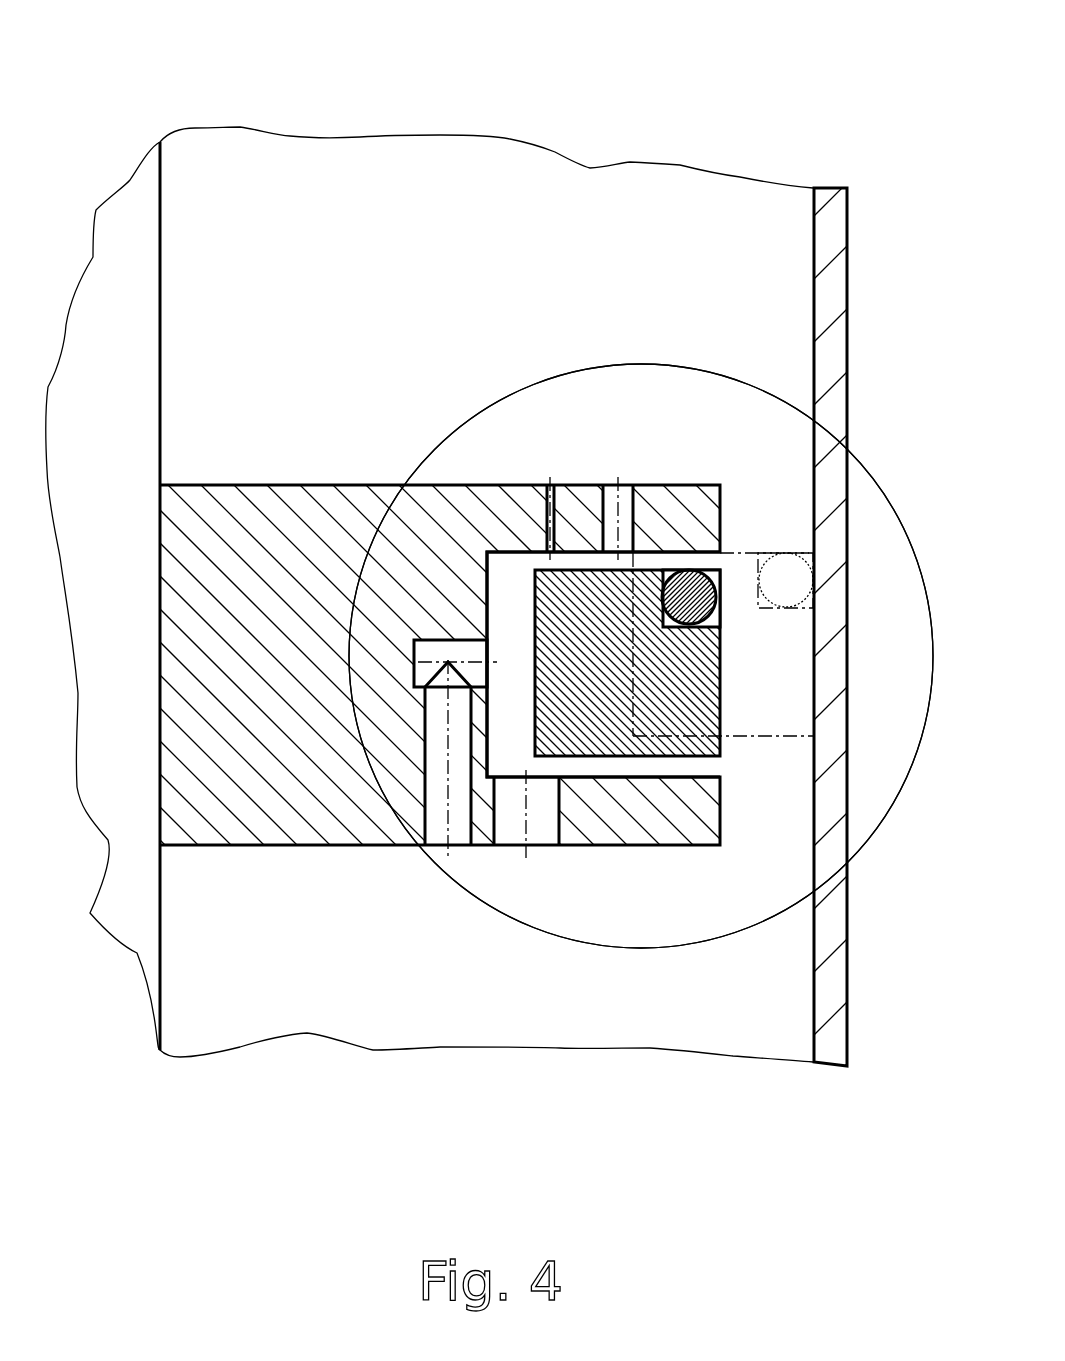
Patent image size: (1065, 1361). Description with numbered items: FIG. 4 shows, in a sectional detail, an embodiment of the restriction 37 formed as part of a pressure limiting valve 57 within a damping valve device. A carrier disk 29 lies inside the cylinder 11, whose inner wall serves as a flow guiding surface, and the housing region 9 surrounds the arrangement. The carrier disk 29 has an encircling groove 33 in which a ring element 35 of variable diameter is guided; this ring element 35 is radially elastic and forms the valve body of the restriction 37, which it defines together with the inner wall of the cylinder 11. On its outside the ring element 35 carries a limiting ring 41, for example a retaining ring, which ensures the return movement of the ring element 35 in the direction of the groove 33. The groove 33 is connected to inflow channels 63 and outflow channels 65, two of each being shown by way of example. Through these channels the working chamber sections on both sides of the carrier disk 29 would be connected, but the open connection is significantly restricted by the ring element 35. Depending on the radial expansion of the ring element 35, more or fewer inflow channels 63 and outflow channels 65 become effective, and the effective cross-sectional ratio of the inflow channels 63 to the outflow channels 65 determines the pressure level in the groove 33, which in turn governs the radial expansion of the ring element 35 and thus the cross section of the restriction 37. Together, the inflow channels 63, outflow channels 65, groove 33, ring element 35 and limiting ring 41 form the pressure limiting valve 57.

The housing 9 is at (123, 287).
The cylinder 11 is at (830, 225).
The carrier disk 29 is at (277, 530).
The encircling groove 33 is at (512, 575).
The ring element 35 is at (583, 715).
The restriction 37 is at (680, 367).
The limiting ring 41 is at (684, 568).
The pressure limiting valve 57 is at (680, 367).
The inflow channel 63 is at (536, 822).
The outflow channel 65 is at (611, 497).